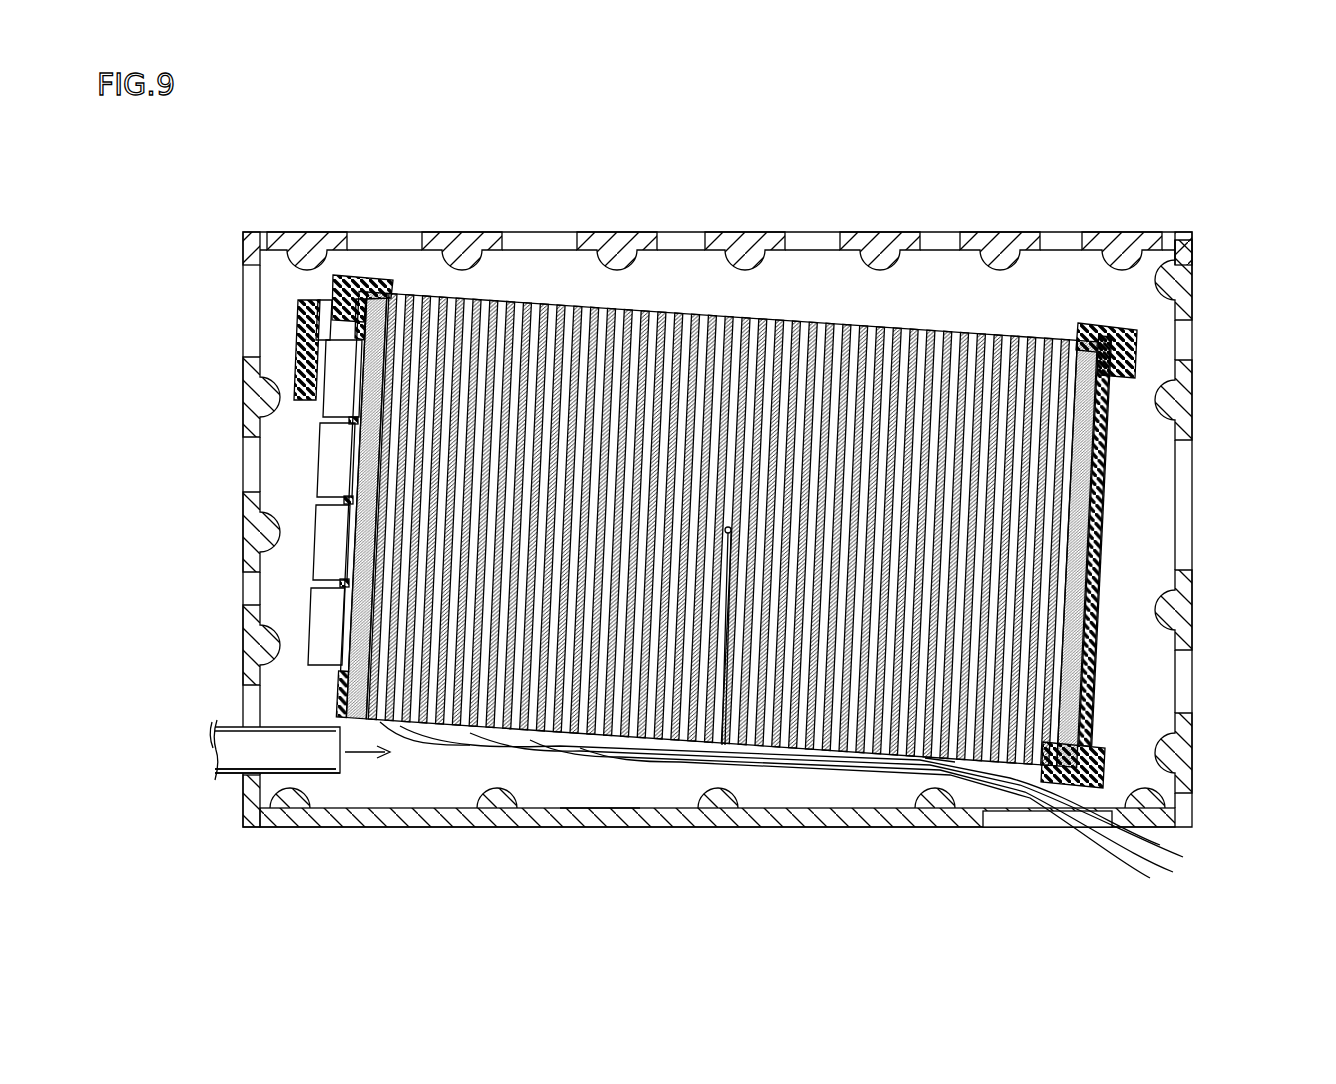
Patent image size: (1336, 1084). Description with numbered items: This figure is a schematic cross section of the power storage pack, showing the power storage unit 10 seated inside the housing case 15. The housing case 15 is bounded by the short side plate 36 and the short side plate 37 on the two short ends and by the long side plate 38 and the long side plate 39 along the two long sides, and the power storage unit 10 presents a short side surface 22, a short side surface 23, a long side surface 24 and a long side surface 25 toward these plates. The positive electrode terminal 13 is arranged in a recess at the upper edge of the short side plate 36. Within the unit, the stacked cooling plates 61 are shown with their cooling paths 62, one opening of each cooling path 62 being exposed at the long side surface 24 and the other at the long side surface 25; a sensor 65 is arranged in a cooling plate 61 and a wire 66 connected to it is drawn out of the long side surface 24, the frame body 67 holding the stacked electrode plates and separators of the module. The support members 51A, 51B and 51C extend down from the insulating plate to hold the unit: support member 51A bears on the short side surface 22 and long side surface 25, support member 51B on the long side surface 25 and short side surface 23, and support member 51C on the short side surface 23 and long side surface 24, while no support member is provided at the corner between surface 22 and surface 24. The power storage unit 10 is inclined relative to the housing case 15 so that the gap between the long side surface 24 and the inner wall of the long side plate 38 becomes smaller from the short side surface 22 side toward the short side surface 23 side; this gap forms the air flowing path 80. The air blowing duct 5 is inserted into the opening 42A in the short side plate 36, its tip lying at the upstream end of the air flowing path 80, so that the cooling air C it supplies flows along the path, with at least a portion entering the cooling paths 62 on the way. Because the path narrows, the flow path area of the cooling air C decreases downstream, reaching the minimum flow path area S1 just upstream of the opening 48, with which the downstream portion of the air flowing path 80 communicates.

The power storage unit 10 is at (812, 523).
The positive electrode terminal 13 is at (305, 369).
The housing case 15 is at (1000, 240).
The short side surface 22 is at (322, 476).
The short side surface 23 is at (1095, 541).
The long side surface 24 is at (706, 528).
The long side surface 25 is at (895, 542).
The short side plate 36 is at (255, 532).
The short side plate 37 is at (1175, 410).
The long side plate 38 is at (428, 822).
The long side plate 39 is at (880, 240).
The opening 42A is at (222, 769).
The opening 48 is at (1003, 822).
The air blowing duct 5 is at (215, 742).
The support member 51A is at (373, 285).
The support member 51B is at (1122, 330).
The support member 51C is at (1100, 768).
The cooling plate 61 is at (550, 517).
The cooling path 62 is at (721, 529).
The sensor 65 is at (741, 322).
The wire 66 is at (808, 752).
The frame body 67 is at (1102, 542).
The air flowing path 80 is at (598, 795).
The flow path area S1 is at (938, 745).
The cooling air C is at (377, 754).